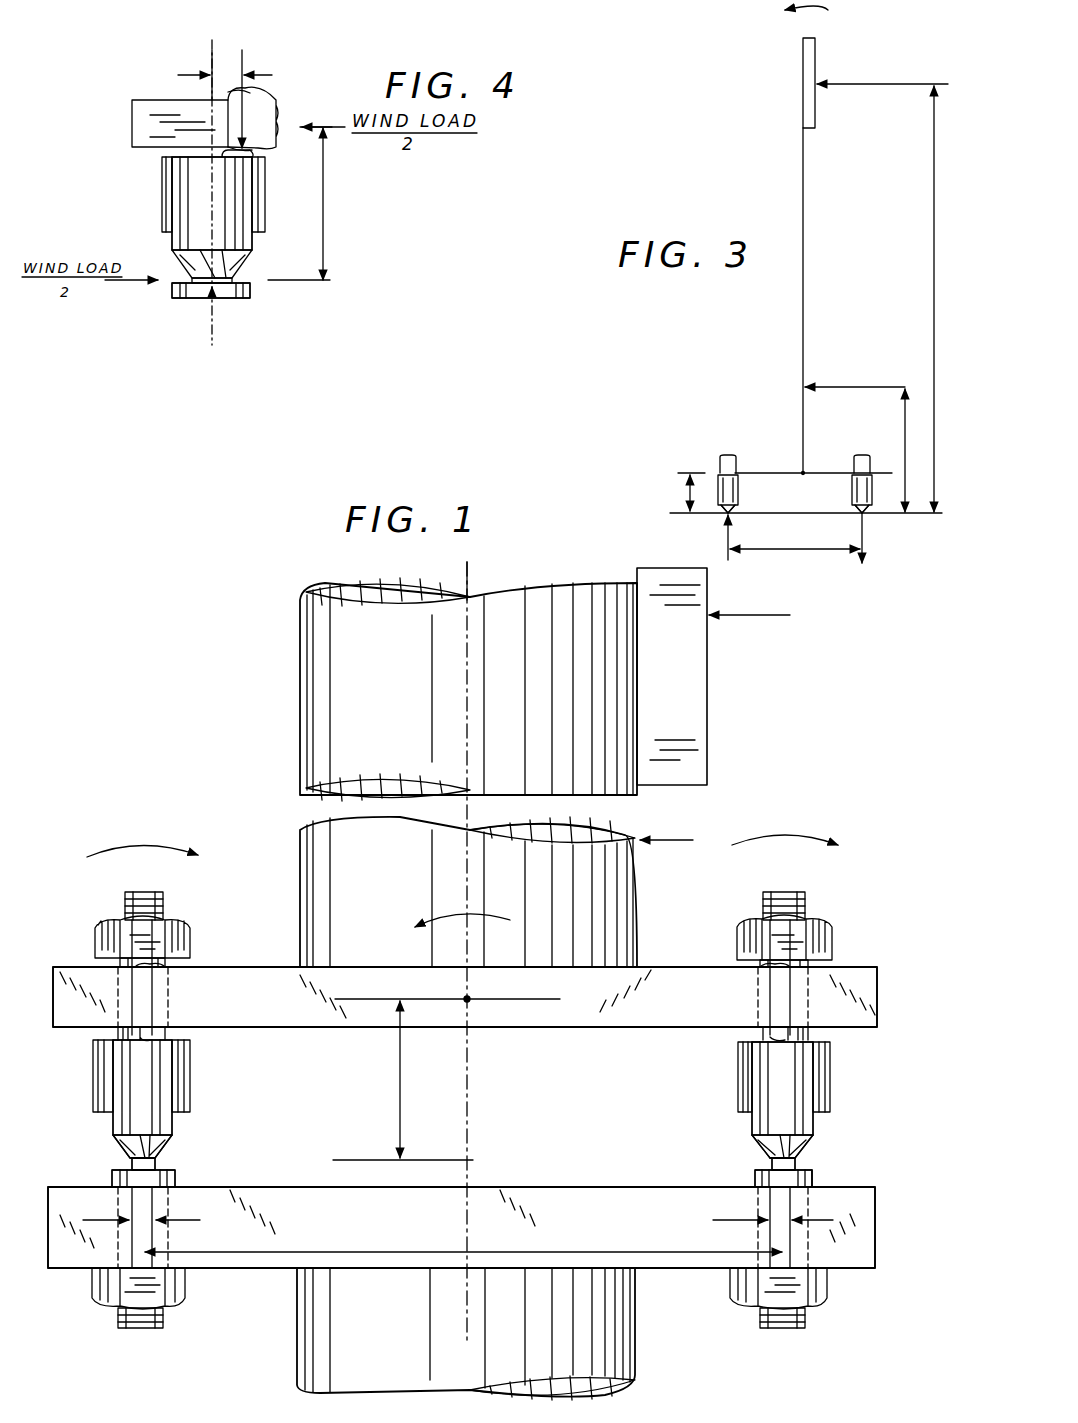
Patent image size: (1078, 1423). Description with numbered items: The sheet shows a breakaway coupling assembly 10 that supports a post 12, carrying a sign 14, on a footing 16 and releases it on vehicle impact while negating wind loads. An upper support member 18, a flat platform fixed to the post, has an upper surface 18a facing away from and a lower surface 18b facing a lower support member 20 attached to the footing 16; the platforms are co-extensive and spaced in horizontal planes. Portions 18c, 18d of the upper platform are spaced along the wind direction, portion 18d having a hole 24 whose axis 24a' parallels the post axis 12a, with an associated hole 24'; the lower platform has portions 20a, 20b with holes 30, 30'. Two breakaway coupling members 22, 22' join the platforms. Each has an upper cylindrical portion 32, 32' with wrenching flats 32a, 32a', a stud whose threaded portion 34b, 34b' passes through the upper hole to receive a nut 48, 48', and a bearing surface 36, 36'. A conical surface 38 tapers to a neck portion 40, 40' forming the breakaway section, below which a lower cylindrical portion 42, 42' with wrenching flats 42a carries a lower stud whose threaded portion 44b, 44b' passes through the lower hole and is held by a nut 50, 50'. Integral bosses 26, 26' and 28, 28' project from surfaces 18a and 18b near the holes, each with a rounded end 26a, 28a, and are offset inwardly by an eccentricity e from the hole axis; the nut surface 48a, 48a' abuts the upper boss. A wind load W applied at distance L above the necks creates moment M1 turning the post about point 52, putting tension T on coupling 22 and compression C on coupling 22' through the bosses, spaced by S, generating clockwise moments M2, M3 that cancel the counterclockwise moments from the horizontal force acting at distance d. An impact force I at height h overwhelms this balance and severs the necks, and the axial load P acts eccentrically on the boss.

In FIG. 1, the coupling assembly 10 is at (228, 800).
In FIG. 3, the post 12 is at (803, 328).
In FIG. 1, the post 12 is at (315, 692).
In FIG. 1, the axis of the post 12a is at (470, 582).
In FIG. 3, the sign 14 is at (803, 70).
In FIG. 1, the sign 14 is at (707, 727).
In FIG. 1, the footing 16 is at (635, 1352).
In FIG. 4, the upper support member 18 is at (148, 103).
In FIG. 3, the upper support member 18 is at (765, 473).
In FIG. 1, the upper support member 18 is at (538, 1028).
In FIG. 1, the upper surface 18a is at (660, 966).
In FIG. 1, the lower surface 18b is at (298, 1028).
In FIG. 1, the platform portion 18c is at (53, 1012).
In FIG. 1, the platform portion 18d is at (877, 1003).
In FIG. 1, the lower support member 20 is at (258, 1270).
In FIG. 1, the lower platform portion 20a is at (875, 1257).
In FIG. 1, the lower platform portion 20b is at (55, 1195).
In FIG. 3, the breakaway coupling member 22 is at (831, 497).
In FIG. 1, the breakaway coupling member 22 is at (744, 1114).
In FIG. 4, the breakaway coupling member 22' is at (174, 227).
In FIG. 3, the breakaway coupling member 22' is at (661, 484).
In FIG. 1, the breakaway coupling member 22' is at (175, 1113).
In FIG. 1, the hole 24 is at (755, 997).
In FIG. 1, the hole 24' is at (177, 997).
In FIG. 4, the hole axis 24a' is at (171, 60).
In FIG. 1, the upper boss 26 is at (740, 977).
In FIG. 4, the upper boss 26' is at (278, 116).
In FIG. 1, the upper boss 26' is at (186, 977).
In FIG. 4, the rounded end of boss 26a is at (232, 92).
In FIG. 1, the lower boss 28 is at (739, 1042).
In FIG. 4, the lower boss 28' is at (269, 176).
In FIG. 1, the lower boss 28' is at (193, 1042).
In FIG. 4, the rounded end of boss 28a is at (228, 155).
In FIG. 1, the hole 30 is at (811, 1227).
In FIG. 1, the hole 30' is at (101, 1243).
In FIG. 1, the upper cylindrical portion 32 is at (812, 1088).
In FIG. 4, the upper cylindrical portion 32' is at (179, 203).
In FIG. 1, the upper cylindrical portion 32' is at (112, 1087).
In FIG. 1, the wrenching flats 32a is at (750, 1136).
In FIG. 1, the wrenching flats 32a' is at (185, 1134).
In FIG. 1, the threaded portion 34b is at (817, 900).
In FIG. 1, the threaded portion 34b' is at (119, 895).
In FIG. 1, the bearing surface 36 is at (844, 1046).
In FIG. 1, the bearing surface 36' is at (81, 1044).
In FIG. 1, the conical surface 38 is at (808, 1148).
In FIG. 3, the neck portion 40 is at (887, 529).
In FIG. 1, the neck portion 40 is at (749, 1155).
In FIG. 3, the neck portion 40' is at (705, 522).
In FIG. 1, the neck portion 40' is at (107, 1148).
In FIG. 1, the lower cylindrical portion 42 is at (755, 1176).
In FIG. 4, the lower cylindrical portion 42' is at (238, 307).
In FIG. 1, the lower cylindrical portion 42' is at (175, 1168).
In FIG. 1, the wrenching flats 42a is at (813, 1176).
In FIG. 1, the threaded portion 44b is at (811, 1324).
In FIG. 1, the threaded portion 44b' is at (124, 1326).
In FIG. 1, the nut 48 is at (811, 937).
In FIG. 1, the nut 48' is at (114, 932).
In FIG. 1, the nut bearing surface 48a is at (827, 954).
In FIG. 1, the nut bearing surface 48a' is at (98, 950).
In FIG. 1, the nut 50 is at (802, 1289).
In FIG. 1, the nut 50' is at (117, 1296).
In FIG. 3, the point 52 is at (803, 474).
In FIG. 1, the point 52 is at (465, 1002).
In FIG. 4, the load force line P is at (224, 189).
In FIG. 4, the eccentricity e is at (234, 73).
In FIG. 1, the eccentricity e is at (458, 1221).
In FIG. 4, the distance d is at (334, 227).
In FIG. 3, the distance d is at (685, 490).
In FIG. 1, the distance d is at (400, 1095).
In FIG. 3, the wind load W is at (905, 84).
In FIG. 1, the wind load W is at (740, 620).
In FIG. 3, the distance L is at (934, 300).
In FIG. 3, the impact force I is at (862, 388).
In FIG. 1, the impact force I is at (673, 841).
In FIG. 3, the distance h is at (905, 455).
In FIG. 3, the spacing S is at (768, 549).
In FIG. 1, the spacing S is at (460, 1252).
In FIG. 3, the compression force C is at (729, 549).
In FIG. 3, the tension force T is at (862, 550).
In FIG. 3, the moment M1 is at (828, 10).
In FIG. 1, the moment M1 is at (490, 923).
In FIG. 1, the moment M2 is at (133, 845).
In FIG. 1, the moment M3 is at (808, 818).